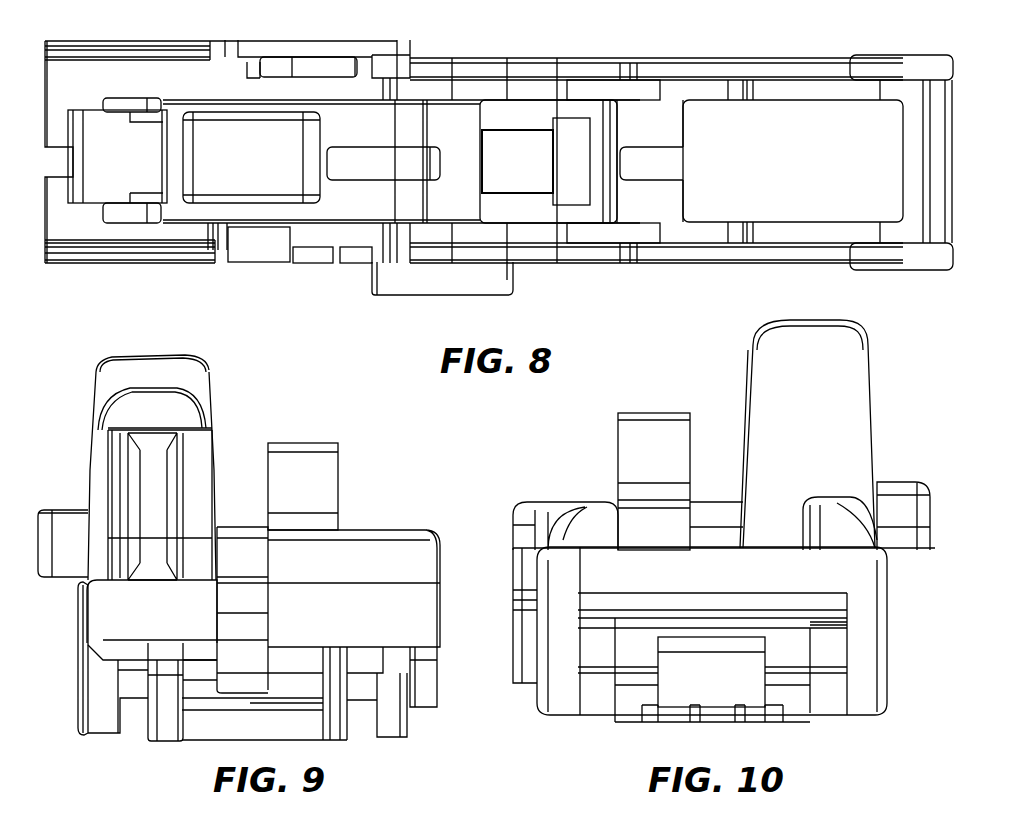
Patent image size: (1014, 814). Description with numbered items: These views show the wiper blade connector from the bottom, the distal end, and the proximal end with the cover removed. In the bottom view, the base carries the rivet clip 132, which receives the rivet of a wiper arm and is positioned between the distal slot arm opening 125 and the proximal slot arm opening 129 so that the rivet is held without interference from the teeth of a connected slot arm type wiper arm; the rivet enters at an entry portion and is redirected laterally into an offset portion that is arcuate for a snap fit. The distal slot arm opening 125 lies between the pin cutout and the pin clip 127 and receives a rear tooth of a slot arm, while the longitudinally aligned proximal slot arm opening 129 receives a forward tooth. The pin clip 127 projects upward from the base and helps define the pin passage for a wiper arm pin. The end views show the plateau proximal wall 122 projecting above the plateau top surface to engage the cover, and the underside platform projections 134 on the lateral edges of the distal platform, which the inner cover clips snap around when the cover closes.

In FIG. 10, the plateau proximal wall 122 is at (820, 442).
In FIG. 8, the distal slot arm opening 125 is at (377, 166).
In FIG. 9, the pin clip 127 is at (302, 487).
In FIG. 10, the pin clip 127 is at (643, 453).
In FIG. 8, the proximal slot arm opening 129 is at (660, 159).
In FIG. 8, the rivet clip 132 is at (433, 224).
In FIG. 8, the underside platform projections 134 is at (170, 255).
In FIG. 9, the underside platform projections 134 is at (428, 653).